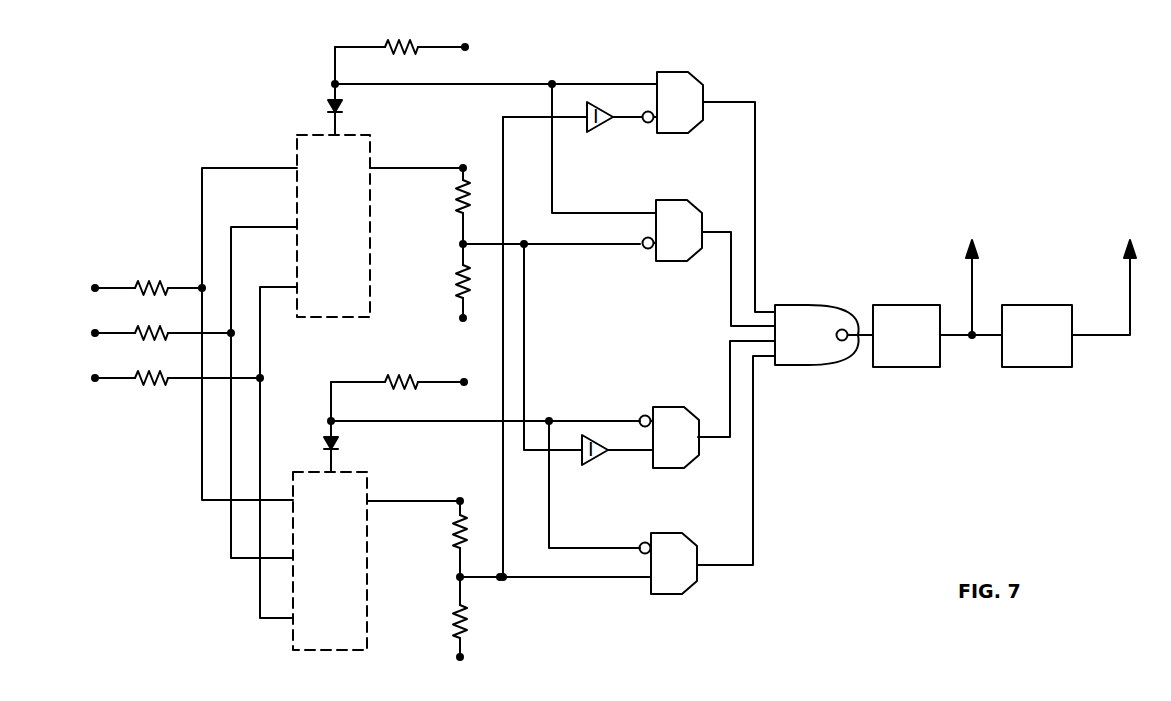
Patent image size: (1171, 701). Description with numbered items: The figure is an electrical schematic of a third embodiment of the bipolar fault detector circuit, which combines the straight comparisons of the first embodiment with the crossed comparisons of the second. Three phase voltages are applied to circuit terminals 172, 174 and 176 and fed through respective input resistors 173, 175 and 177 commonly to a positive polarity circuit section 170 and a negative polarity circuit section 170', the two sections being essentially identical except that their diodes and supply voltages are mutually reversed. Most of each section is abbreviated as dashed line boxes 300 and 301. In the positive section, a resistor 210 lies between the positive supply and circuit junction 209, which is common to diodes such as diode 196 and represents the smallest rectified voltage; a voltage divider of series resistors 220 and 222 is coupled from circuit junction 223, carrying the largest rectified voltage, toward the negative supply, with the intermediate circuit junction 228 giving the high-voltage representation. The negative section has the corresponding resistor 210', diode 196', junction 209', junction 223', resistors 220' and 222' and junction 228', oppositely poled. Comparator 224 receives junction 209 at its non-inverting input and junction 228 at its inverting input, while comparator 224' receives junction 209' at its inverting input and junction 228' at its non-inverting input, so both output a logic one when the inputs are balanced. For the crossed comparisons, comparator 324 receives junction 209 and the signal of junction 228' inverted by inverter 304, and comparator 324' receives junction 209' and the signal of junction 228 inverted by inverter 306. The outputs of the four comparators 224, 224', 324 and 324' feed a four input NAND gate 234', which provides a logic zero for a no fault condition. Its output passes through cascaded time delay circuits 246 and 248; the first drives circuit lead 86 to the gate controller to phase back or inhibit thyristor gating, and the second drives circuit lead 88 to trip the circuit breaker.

The circuit lead 86 is at (974, 290).
The circuit lead 88 is at (1130, 284).
The positive polarity circuit section 170 is at (250, 142).
The negative polarity circuit section 170' is at (253, 639).
The circuit terminal 172 is at (82, 288).
The input resistor 173 is at (163, 278).
The circuit terminal 174 is at (82, 333).
The input resistor 175 is at (163, 324).
The circuit terminal 176 is at (82, 378).
The input resistor 177 is at (163, 370).
The diode 196 is at (305, 108).
The diode 196' is at (303, 448).
The circuit junction 209 is at (465, 91).
The circuit junction 209' is at (458, 427).
The resistor 210 is at (421, 31).
The resistor 210' is at (413, 365).
The resistor 220 is at (431, 212).
The resistor 220' is at (424, 546).
The resistor 222 is at (430, 294).
The resistor 222' is at (425, 631).
The circuit junction 223 is at (418, 156).
The circuit junction 223' is at (416, 489).
The dual input comparator circuit 224 is at (709, 246).
The comparator circuit 224' is at (708, 496).
The circuit junction 228 is at (515, 241).
The circuit junction 228' is at (516, 576).
The four input NAND gate 234' is at (824, 318).
The first time delay circuit 246 is at (909, 305).
The second time delay circuit 248 is at (1046, 300).
The dashed line box 300 is at (357, 317).
The dashed line box 301 is at (340, 650).
The inverter 304 is at (604, 132).
The inverter 306 is at (602, 467).
The comparator 324 is at (716, 175).
The comparator 324' is at (708, 424).